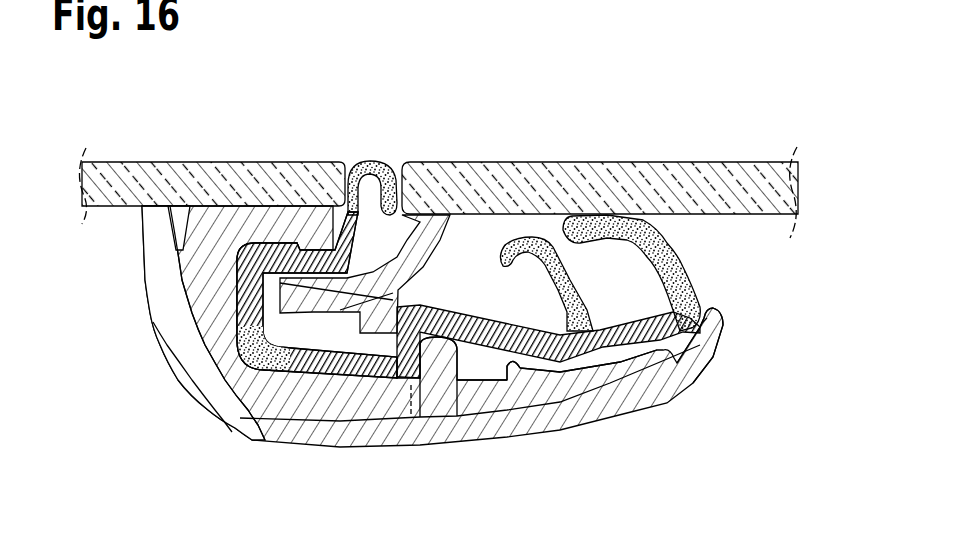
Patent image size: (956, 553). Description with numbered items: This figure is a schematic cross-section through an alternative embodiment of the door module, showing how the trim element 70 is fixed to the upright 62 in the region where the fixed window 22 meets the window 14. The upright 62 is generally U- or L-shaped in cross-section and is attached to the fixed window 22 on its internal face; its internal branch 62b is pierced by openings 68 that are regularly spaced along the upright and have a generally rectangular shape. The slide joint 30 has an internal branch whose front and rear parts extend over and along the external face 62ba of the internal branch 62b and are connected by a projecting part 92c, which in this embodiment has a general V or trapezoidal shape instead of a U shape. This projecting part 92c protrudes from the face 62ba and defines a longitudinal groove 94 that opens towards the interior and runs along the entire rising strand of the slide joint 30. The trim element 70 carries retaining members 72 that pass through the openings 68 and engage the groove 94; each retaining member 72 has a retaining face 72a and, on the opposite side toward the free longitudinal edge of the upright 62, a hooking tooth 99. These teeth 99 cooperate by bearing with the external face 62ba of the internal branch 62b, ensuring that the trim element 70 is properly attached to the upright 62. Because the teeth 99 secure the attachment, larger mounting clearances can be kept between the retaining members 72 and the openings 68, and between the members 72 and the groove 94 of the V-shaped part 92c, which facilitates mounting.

The window 14 is at (607, 162).
The fixed window 22 is at (284, 162).
The slide joint 30 is at (707, 287).
The upright 62 is at (617, 377).
The internal branch 62b is at (262, 418).
The external face of the internal branch 62ba is at (533, 425).
The openings 68 is at (407, 425).
The trim element 70 is at (693, 373).
The retaining members 72 is at (448, 410).
The retaining faces 72a is at (365, 426).
The projecting part 92c is at (440, 352).
The longitudinal groove 94 is at (465, 360).
The hooking tooth 99 is at (477, 405).